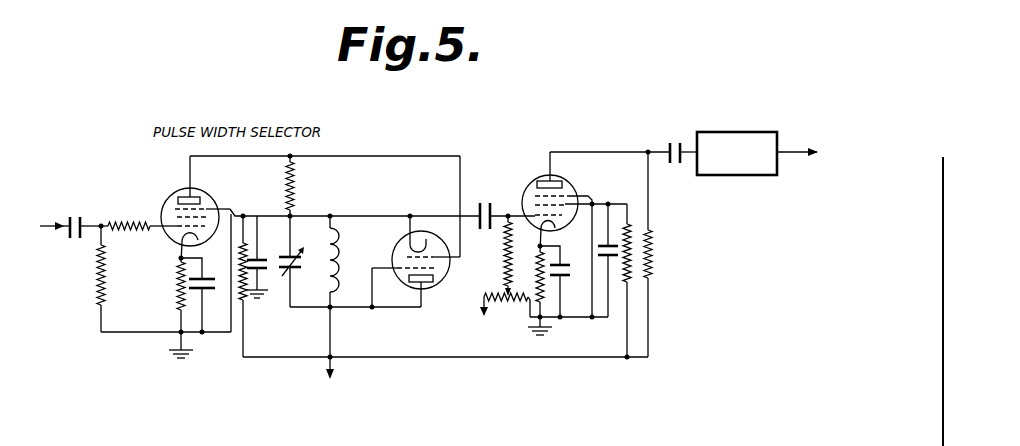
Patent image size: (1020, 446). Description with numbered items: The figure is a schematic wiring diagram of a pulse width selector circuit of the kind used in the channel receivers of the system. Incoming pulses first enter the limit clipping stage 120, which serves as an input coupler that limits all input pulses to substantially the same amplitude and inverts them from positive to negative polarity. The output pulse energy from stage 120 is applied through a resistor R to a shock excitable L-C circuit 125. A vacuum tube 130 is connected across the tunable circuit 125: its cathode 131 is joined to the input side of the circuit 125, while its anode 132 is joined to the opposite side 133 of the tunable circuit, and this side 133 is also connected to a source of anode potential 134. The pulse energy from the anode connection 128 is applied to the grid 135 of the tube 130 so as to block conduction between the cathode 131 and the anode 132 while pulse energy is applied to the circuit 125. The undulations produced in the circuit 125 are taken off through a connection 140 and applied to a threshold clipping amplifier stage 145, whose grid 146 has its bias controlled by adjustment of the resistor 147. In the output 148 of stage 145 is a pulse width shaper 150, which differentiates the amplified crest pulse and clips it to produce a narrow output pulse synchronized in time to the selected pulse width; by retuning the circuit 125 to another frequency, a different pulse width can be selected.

The limit clipping stage 120 is at (165, 194).
The shock excitable L-C circuit 125 is at (288, 233).
The anode connection 128 is at (213, 159).
The vacuum tube 130 is at (426, 262).
The cathode 131 is at (421, 246).
The anode 132 is at (433, 283).
The opposite side of the tunable circuit 133 is at (322, 310).
The source of anode potential 134 is at (327, 374).
The grid 135 is at (443, 259).
The connection 140 is at (468, 215).
The threshold clipping amplifier stage 145 is at (557, 228).
The grid 146 is at (527, 210).
The resistor 147 is at (506, 288).
The output 148 is at (656, 149).
The pulse width shaper 150 is at (740, 131).